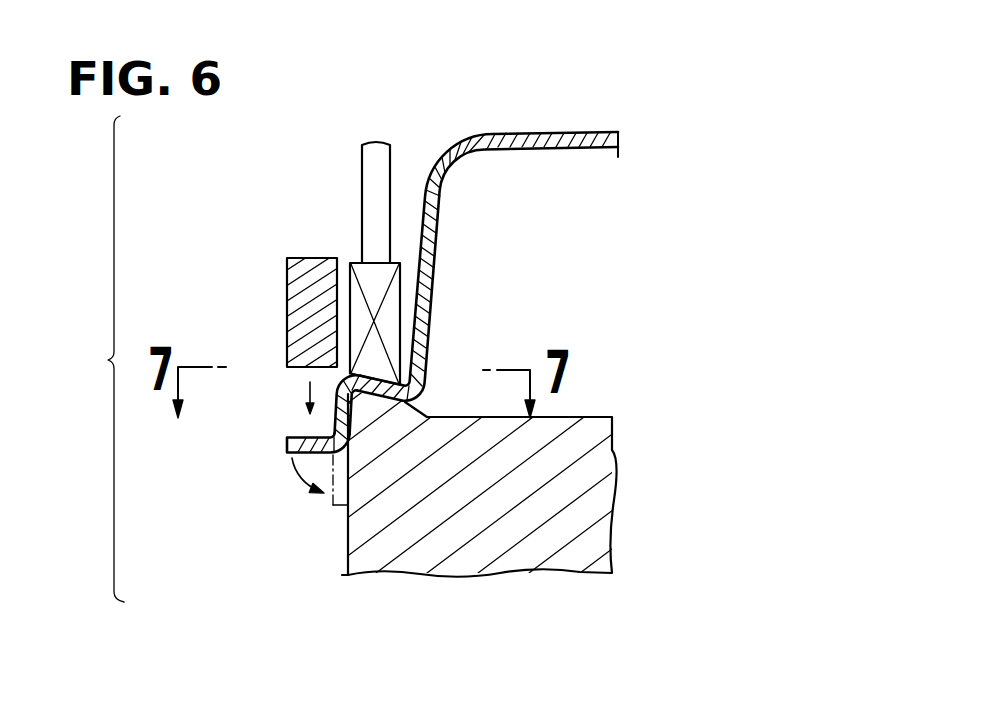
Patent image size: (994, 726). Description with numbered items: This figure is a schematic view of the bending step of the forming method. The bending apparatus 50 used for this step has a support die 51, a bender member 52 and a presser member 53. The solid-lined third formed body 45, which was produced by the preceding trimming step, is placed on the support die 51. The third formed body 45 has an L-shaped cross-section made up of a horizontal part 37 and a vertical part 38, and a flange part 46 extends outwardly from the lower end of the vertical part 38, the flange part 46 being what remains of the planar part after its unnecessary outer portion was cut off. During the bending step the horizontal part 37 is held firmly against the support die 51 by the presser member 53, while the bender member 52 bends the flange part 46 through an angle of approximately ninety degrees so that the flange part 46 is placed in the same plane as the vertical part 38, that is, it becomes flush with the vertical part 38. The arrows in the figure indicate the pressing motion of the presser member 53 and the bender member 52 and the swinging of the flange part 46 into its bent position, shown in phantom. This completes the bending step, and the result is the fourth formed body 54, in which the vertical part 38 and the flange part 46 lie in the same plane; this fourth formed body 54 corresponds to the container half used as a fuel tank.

The third formed body 45 is at (543, 241).
The fourth formed body 54 is at (556, 132).
The presser member 53 is at (352, 262).
The bender member 52 is at (287, 291).
The bending apparatus 50 is at (108, 360).
The vertical part 38 is at (333, 411).
The flange part 46 is at (293, 455).
The horizontal part 37 is at (381, 390).
The support die 51 is at (466, 530).